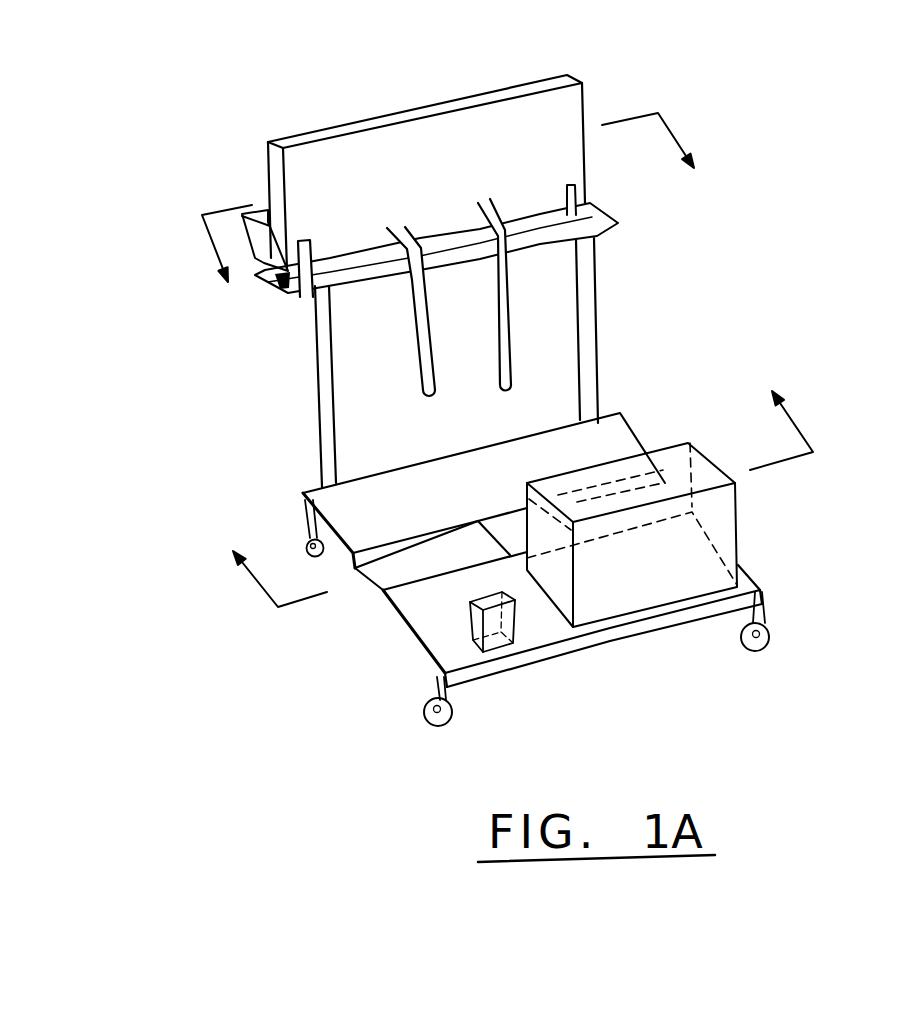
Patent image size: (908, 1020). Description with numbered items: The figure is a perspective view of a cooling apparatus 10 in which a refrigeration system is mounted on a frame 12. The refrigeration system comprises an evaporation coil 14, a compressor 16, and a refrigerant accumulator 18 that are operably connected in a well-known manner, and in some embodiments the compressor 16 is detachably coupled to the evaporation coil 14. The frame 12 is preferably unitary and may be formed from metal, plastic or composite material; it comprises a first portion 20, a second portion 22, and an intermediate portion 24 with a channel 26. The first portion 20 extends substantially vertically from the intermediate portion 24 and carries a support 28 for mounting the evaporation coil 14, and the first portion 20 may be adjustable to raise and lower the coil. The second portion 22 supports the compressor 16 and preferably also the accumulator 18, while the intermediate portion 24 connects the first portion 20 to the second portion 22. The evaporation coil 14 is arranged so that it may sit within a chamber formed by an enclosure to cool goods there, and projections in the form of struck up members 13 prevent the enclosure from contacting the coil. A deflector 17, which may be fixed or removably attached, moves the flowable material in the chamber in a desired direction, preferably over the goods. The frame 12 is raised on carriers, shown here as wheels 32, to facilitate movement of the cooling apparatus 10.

The cooling apparatus 10 is at (151, 114).
The frame 12 is at (423, 652).
The struck up members 13 is at (508, 318).
The evaporation coil 14 is at (333, 127).
The compressor 16 is at (738, 510).
The deflector 17 is at (258, 208).
The refrigerant accumulator 18 is at (520, 632).
The first portion 20 is at (313, 490).
The second portion 22 is at (760, 588).
The intermediate portion 24 is at (388, 614).
The channel 26 is at (375, 579).
The support 28 is at (578, 191).
The wheels 32 is at (422, 716).